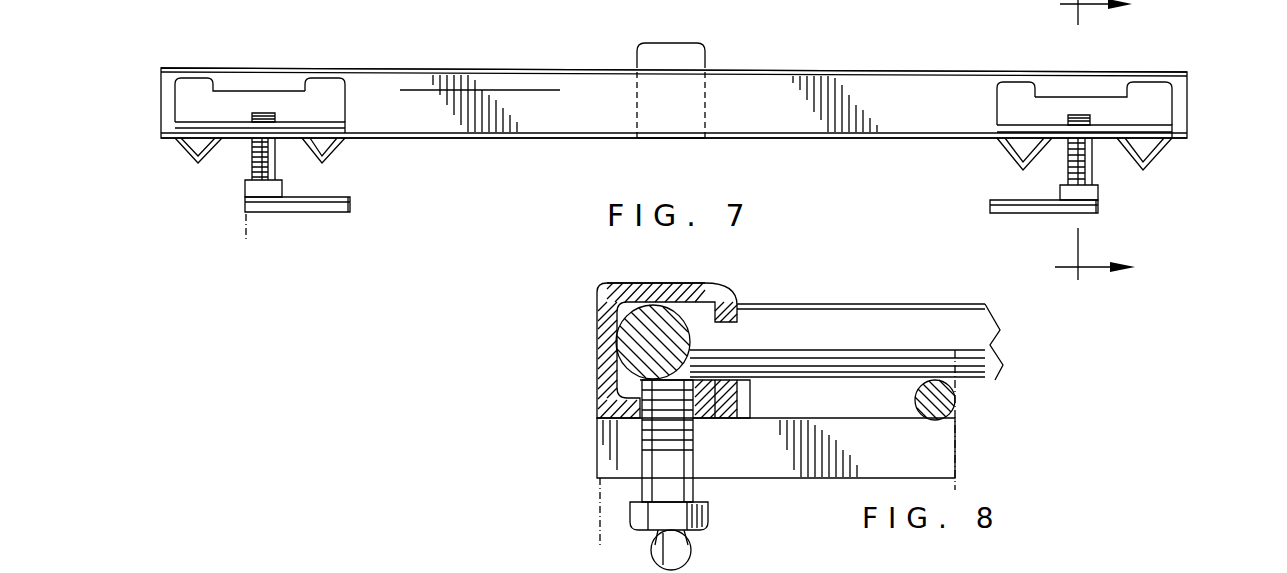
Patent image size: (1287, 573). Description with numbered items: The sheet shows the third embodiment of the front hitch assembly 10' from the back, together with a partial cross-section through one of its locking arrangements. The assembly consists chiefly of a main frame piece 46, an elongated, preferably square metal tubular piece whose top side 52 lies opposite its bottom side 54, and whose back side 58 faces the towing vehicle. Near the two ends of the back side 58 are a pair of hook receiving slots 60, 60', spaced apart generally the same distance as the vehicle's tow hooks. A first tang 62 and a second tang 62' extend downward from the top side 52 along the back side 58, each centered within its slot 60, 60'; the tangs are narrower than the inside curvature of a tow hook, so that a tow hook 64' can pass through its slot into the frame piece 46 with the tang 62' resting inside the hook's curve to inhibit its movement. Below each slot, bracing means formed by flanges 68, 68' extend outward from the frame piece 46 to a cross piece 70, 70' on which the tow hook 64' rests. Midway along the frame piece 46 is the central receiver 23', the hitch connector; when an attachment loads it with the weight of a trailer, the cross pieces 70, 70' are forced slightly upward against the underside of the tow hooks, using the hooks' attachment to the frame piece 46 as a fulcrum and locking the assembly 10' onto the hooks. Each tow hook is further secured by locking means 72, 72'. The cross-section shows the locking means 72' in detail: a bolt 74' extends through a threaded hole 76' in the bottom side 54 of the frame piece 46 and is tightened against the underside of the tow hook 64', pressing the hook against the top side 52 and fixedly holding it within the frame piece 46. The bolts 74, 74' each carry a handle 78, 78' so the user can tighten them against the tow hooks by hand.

In FIG. 7, the front hitch assembly 10' is at (626, 172).
In FIG. 7, the central receiver 23' is at (722, 79).
In FIG. 7, the main frame piece 46 is at (602, 69).
In FIG. 8, the main frame piece 46 is at (597, 350).
In FIG. 7, the top side 52 is at (557, 69).
In FIG. 8, the top side 52 is at (688, 283).
In FIG. 7, the bottom side 54 is at (545, 138).
In FIG. 8, the bottom side 54 is at (628, 410).
In FIG. 7, the back side 58 is at (605, 116).
In FIG. 7, the hook receiving slot 60 is at (347, 74).
In FIG. 7, the first tang 62 is at (251, 74).
In FIG. 7, the flange 68 is at (264, 160).
In FIG. 7, the cross piece 70 is at (224, 113).
In FIG. 7, the locking means 72 is at (193, 228).
In FIG. 7, the bolt 74 is at (237, 160).
In FIG. 7, the handle 78 is at (312, 226).
In FIG. 7, the hook receiving slot 60' is at (1002, 79).
In FIG. 7, the second tang 62' is at (1103, 79).
In FIG. 8, the second tang 62' is at (766, 294).
In FIG. 8, the tow hook 64' is at (886, 342).
In FIG. 7, the flange 68' is at (1077, 160).
In FIG. 8, the flange 68' is at (812, 448).
In FIG. 7, the cross piece 70' is at (1122, 121).
In FIG. 8, the cross piece 70' is at (824, 397).
In FIG. 7, the locking means 72' is at (1111, 143).
In FIG. 8, the locking means 72' is at (552, 511).
In FIG. 7, the bolt 74' is at (1049, 161).
In FIG. 8, the bolt 74' is at (708, 455).
In FIG. 8, the threaded hole 76' is at (723, 399).
In FIG. 7, the handle 78' is at (1044, 228).
In FIG. 8, the handle 78' is at (706, 551).